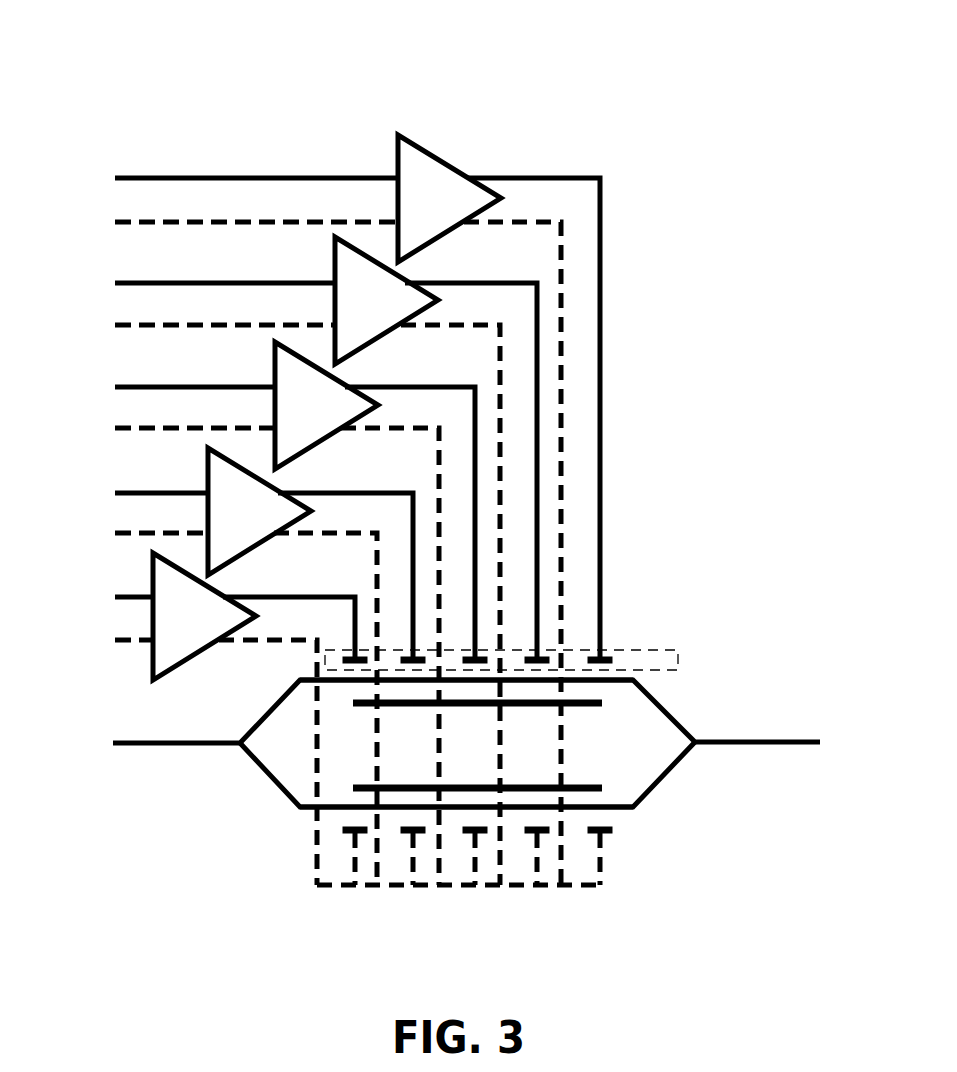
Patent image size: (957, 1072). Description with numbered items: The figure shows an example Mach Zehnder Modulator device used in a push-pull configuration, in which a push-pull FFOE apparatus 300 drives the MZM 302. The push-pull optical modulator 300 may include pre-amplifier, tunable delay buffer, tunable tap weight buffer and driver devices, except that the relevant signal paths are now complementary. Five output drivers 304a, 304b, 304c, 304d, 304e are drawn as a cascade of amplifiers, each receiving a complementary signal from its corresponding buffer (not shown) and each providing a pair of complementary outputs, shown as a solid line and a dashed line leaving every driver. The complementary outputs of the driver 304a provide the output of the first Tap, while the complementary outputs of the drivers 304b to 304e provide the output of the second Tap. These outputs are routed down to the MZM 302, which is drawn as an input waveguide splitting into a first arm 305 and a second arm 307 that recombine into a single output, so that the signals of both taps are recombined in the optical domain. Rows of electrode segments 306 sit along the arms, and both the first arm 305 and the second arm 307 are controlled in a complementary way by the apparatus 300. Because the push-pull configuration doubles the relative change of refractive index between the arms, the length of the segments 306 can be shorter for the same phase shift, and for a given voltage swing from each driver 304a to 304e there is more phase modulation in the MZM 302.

The push-pull optical modulator 300 is at (130, 110).
The MZM 302 is at (466, 777).
The driver 304a is at (357, 510).
The driver 304b is at (326, 561).
The driver 304c is at (295, 613).
The driver 304d is at (264, 666).
The driver 304e is at (235, 719).
The first arm 305 is at (610, 788).
The segments 306 is at (679, 662).
The second arm 307 is at (637, 686).